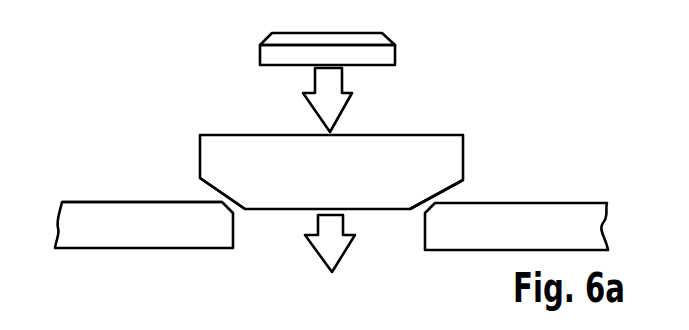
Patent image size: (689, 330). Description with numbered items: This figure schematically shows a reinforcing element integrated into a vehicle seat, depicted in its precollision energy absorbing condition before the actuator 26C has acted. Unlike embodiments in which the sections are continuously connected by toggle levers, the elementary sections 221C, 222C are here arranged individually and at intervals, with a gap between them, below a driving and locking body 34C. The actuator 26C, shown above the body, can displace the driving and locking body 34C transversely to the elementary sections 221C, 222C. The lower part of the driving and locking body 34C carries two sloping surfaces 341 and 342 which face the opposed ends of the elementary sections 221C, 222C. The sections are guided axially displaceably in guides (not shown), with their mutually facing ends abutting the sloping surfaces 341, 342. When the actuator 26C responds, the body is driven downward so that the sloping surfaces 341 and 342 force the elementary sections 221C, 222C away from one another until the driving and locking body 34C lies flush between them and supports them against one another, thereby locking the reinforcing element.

The actuator 26C is at (385, 32).
The driving and locking body 34C is at (453, 148).
The sloping surface 341 is at (237, 198).
The sloping surface 342 is at (435, 195).
The elementary section 221C is at (83, 208).
The elementary section 222C is at (555, 213).